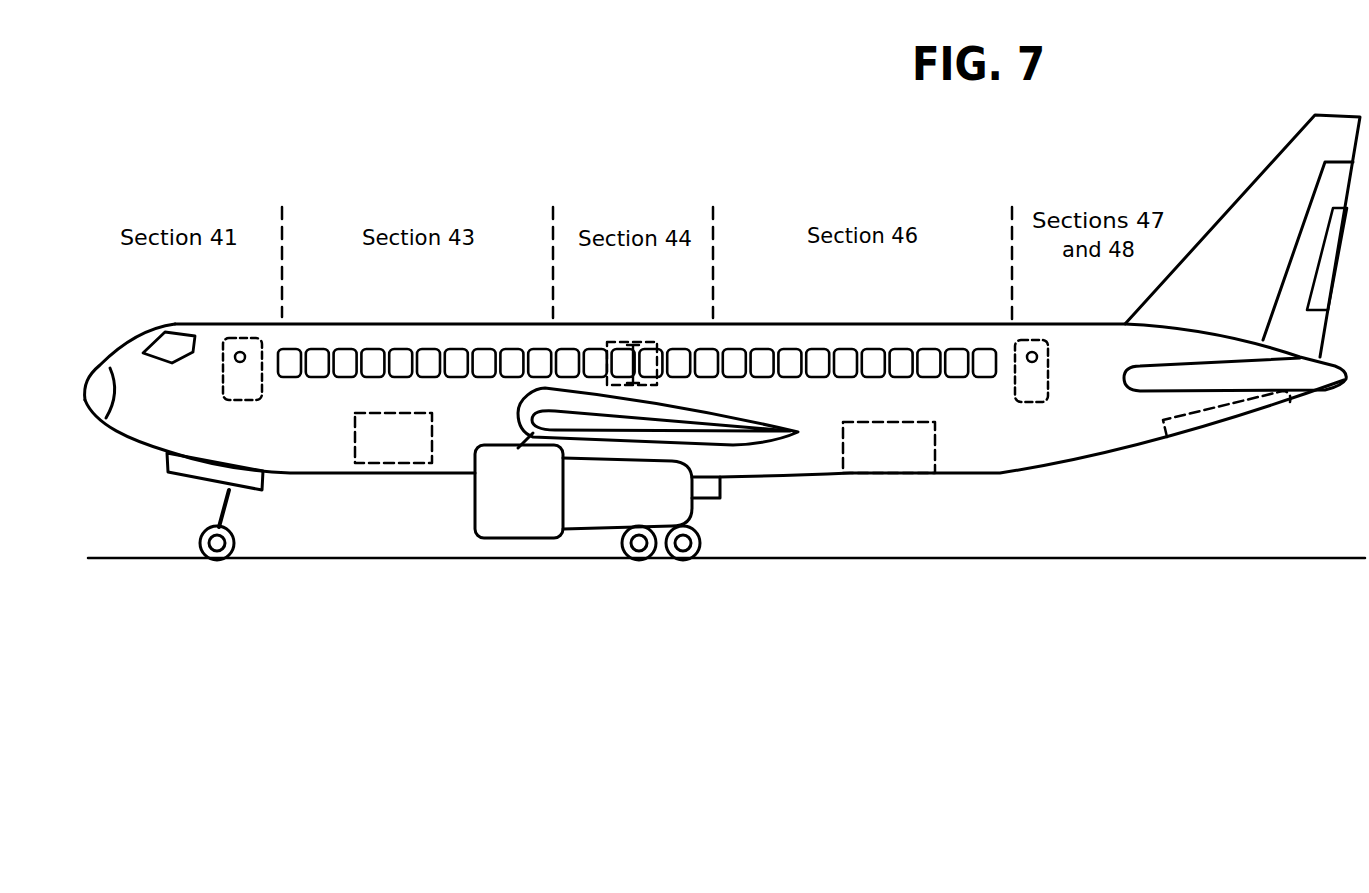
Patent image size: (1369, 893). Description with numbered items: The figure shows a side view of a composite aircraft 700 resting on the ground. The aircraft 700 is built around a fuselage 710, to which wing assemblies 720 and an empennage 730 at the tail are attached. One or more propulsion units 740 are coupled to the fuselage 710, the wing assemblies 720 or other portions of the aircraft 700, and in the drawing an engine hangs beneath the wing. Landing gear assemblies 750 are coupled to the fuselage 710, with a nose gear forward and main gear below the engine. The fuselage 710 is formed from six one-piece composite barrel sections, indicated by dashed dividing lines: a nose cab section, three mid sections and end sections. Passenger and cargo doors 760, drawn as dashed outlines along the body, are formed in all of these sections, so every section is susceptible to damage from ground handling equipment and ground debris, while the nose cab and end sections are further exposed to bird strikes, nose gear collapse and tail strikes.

The composite aircraft 700 is at (262, 134).
The fuselage 710 is at (458, 322).
The wing assemblies 720 is at (745, 442).
The empennage 730 is at (1270, 167).
The propulsion units 740 is at (502, 540).
The landing gear assemblies 750 is at (218, 513).
The passenger and cargo doors 760 is at (227, 342).